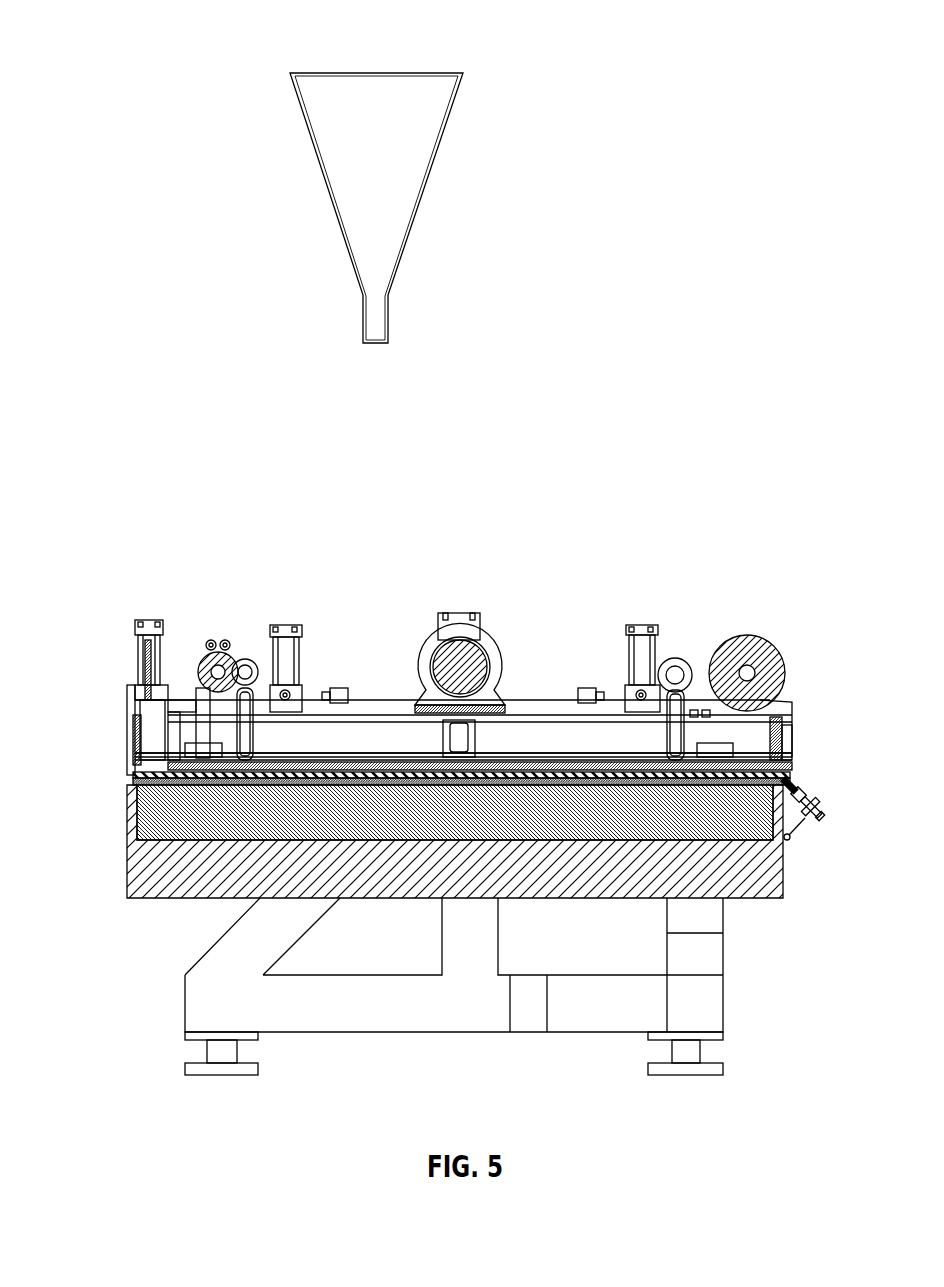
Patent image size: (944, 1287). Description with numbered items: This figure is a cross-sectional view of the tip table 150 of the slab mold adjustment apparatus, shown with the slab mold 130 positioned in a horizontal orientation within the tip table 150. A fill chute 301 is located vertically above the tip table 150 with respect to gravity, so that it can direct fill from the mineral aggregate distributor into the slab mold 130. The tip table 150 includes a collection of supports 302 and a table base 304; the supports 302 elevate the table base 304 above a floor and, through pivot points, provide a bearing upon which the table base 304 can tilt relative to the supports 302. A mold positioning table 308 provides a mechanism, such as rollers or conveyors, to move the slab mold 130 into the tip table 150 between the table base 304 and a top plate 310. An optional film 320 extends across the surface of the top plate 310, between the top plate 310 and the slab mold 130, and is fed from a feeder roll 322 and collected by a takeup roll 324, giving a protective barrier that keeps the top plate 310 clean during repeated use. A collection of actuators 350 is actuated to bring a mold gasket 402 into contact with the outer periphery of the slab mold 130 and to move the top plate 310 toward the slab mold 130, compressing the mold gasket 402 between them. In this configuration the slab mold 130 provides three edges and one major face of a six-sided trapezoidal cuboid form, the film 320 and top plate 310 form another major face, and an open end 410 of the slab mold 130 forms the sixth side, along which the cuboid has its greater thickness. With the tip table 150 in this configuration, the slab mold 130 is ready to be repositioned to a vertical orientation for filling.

The fill chute 301 is at (270, 108).
The tip table 150 is at (78, 528).
The collection of actuators 350 is at (162, 620).
The feeder roll 322 is at (170, 767).
The film 320 is at (217, 700).
The takeup roll 324 is at (770, 648).
The top plate 310 is at (487, 760).
The mold gasket 402 is at (133, 763).
The slab mold 130 is at (133, 777).
The open end 410 is at (783, 777).
The mold positioning table 308 is at (137, 825).
The table base 304 is at (148, 899).
The supports 302 is at (185, 992).